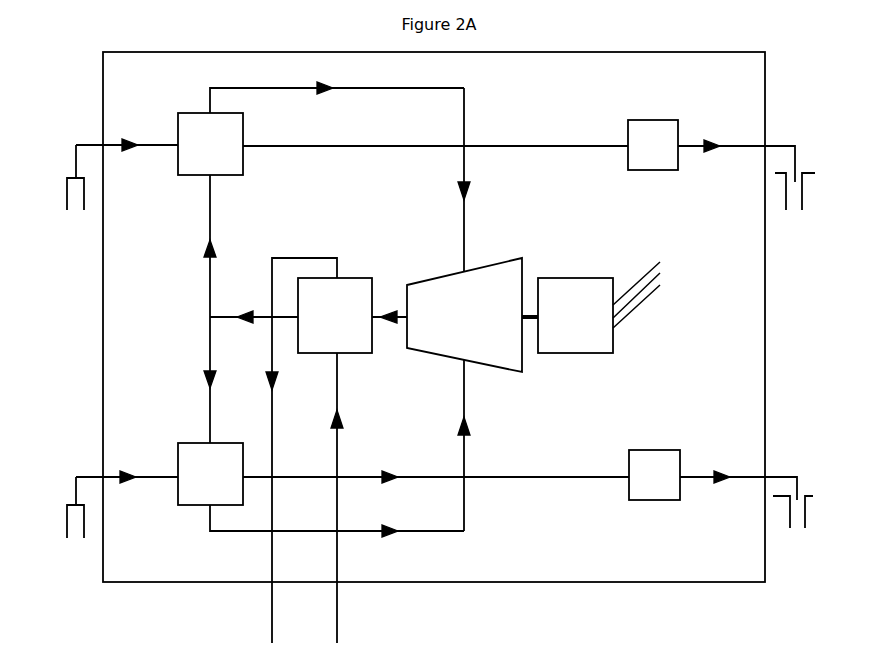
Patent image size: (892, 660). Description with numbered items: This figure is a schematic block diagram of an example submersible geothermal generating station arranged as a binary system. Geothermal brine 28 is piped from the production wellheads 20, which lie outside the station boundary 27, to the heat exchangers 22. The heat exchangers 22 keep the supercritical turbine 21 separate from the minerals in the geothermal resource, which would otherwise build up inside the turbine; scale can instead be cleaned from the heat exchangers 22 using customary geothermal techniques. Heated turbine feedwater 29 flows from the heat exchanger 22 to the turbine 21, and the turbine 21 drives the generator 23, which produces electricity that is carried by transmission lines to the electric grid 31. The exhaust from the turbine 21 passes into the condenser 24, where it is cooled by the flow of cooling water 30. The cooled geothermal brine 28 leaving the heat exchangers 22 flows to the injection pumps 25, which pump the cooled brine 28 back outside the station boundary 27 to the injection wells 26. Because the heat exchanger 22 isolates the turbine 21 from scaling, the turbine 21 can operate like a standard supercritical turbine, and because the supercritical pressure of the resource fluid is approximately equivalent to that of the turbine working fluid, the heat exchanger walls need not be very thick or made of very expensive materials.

The production wellhead 20 is at (118, 356).
The supercritical turbine 21 is at (447, 315).
The heat exchanger 22 is at (210, 309).
The generator 23 is at (567, 315).
The condenser 24 is at (335, 315).
The injection pump 25 is at (654, 310).
The injection well 26 is at (746, 351).
The station boundary 27 is at (495, 55).
The geothermal brine 28 is at (263, 143).
The heated turbine feedwater 29 is at (472, 218).
The cooling water 30 is at (304, 450).
The electric grid 31 is at (647, 295).